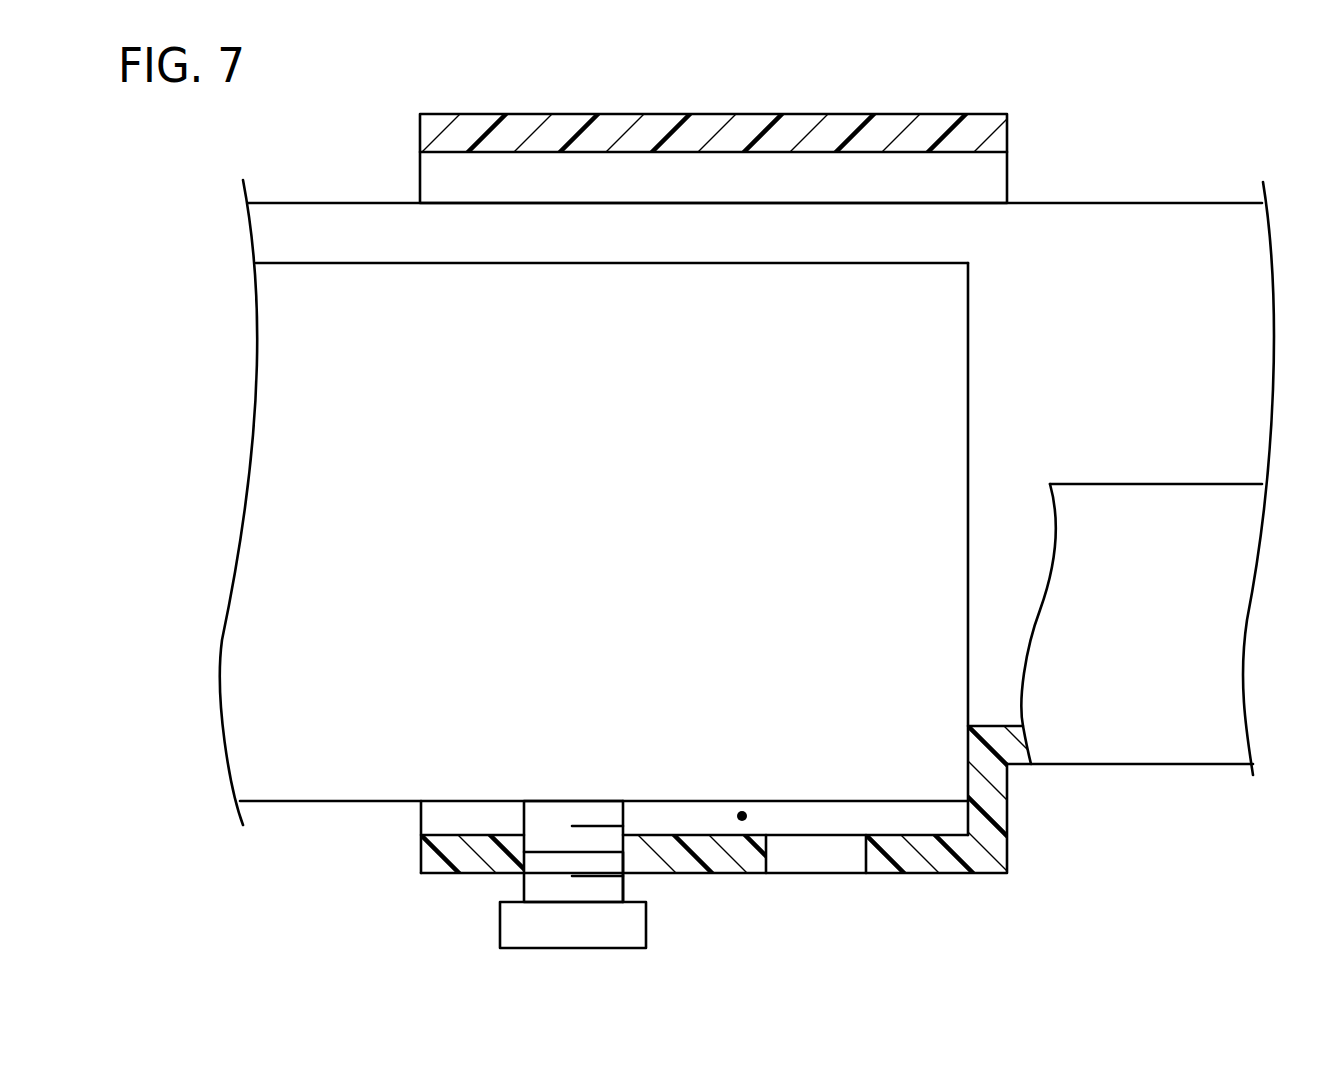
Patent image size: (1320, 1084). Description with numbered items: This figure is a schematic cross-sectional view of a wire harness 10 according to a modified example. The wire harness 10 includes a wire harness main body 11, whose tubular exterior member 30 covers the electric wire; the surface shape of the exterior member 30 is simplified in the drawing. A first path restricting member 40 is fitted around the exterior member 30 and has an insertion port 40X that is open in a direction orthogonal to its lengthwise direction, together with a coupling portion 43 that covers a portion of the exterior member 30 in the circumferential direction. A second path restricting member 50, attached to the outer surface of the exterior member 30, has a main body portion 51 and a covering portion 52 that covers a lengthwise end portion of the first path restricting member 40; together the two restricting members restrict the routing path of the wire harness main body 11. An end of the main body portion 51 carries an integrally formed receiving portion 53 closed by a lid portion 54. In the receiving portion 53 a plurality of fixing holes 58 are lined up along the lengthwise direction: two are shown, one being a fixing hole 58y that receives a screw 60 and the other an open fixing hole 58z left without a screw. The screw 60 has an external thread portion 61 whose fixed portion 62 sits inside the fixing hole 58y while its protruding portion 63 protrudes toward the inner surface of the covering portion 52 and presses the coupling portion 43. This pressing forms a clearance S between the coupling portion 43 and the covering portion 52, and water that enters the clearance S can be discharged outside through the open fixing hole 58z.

The wire harness 10 is at (1040, 98).
The wire harness main body 11 is at (1105, 201).
The exterior member 30 is at (281, 202).
The first path restricting member 40 is at (300, 805).
The insertion port 40X is at (344, 265).
The coupling portion 43 is at (367, 788).
The second path restricting member 50 is at (1164, 768).
The main body portion 51 is at (1105, 765).
The covering portion 52 is at (947, 876).
The receiving portion 53 is at (436, 868).
The lid portion 54 is at (714, 113).
The fixing hole 58 is at (750, 877).
The fixing hole 58y is at (612, 877).
The open fixing hole 58z is at (862, 858).
The screw 60 is at (624, 948).
The external thread portion 61 is at (623, 816).
The fixed portion 62 is at (552, 858).
The protruding portion 63 is at (598, 808).
The clearance S is at (745, 808).